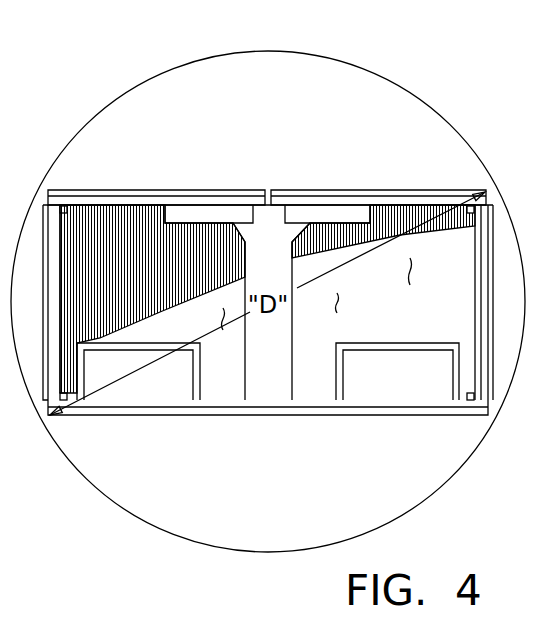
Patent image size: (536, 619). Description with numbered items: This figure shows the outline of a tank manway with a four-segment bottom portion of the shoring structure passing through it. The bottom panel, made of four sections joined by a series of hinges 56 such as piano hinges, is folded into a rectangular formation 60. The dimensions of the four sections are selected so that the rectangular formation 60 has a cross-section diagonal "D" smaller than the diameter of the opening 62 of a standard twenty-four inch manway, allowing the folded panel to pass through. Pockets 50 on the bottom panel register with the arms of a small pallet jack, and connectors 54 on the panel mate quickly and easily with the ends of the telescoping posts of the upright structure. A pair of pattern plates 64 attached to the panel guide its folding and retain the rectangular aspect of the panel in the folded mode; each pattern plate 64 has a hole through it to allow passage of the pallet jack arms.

The pocket 50 is at (187, 367).
The connector 54 is at (180, 217).
The hinge 56 is at (468, 213).
The rectangular formation 60 is at (213, 188).
The opening 62 is at (393, 78).
The pattern plate 64 is at (375, 325).